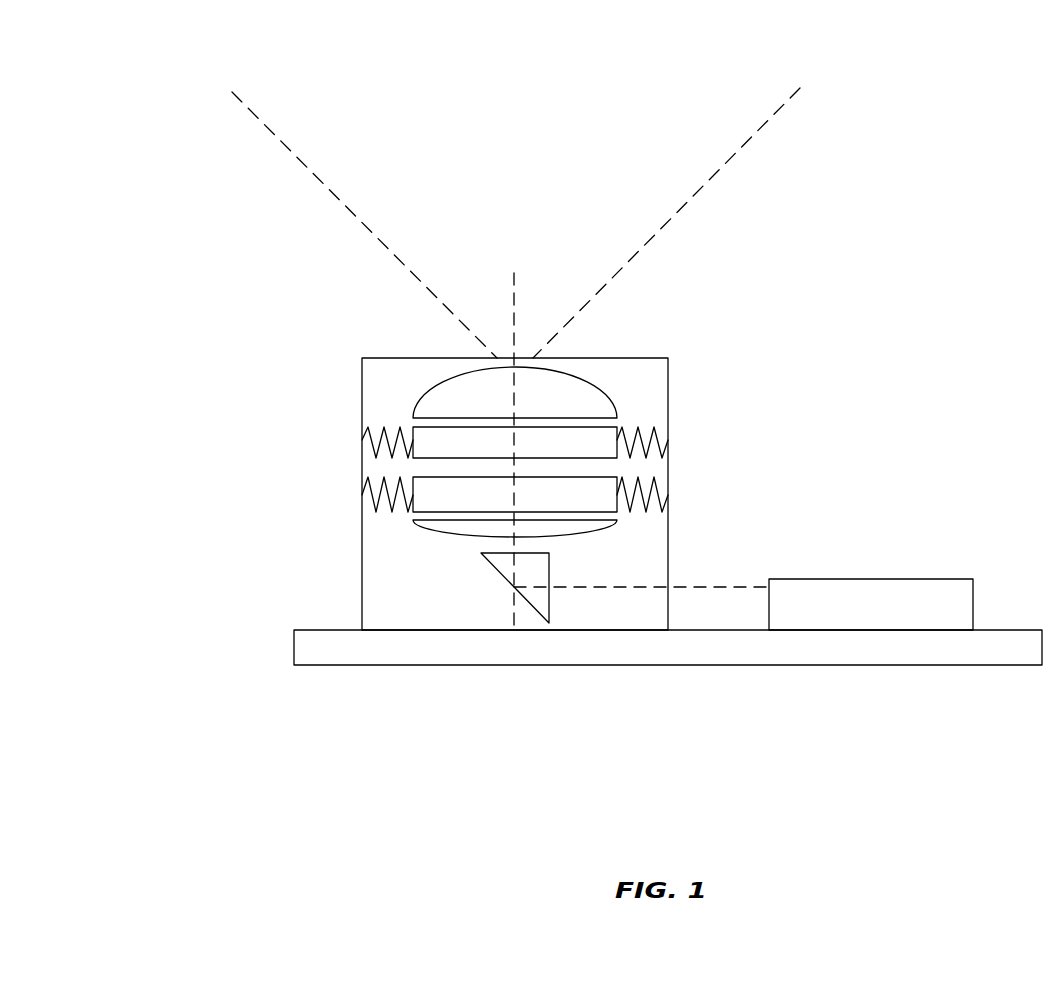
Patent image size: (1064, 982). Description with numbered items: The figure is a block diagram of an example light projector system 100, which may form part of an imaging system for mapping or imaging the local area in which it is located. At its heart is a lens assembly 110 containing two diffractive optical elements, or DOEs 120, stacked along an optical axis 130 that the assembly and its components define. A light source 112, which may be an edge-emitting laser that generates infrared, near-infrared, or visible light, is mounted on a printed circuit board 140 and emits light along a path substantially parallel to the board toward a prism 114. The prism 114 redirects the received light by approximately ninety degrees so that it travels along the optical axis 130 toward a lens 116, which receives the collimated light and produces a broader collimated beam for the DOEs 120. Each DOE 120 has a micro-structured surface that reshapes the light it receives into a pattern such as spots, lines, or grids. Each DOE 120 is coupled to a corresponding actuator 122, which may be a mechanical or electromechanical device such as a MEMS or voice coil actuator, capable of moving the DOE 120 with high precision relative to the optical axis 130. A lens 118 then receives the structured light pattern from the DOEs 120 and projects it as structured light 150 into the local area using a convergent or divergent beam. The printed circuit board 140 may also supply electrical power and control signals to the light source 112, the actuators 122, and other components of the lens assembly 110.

The light projector system 100 is at (165, 93).
The lens assembly 110 is at (362, 372).
The light source 112 is at (838, 579).
The prism 114 is at (500, 572).
The lens 116 is at (443, 528).
The lens 118 is at (422, 393).
The diffractive optical element 120 is at (430, 474).
The actuator 122 is at (668, 485).
The optical axis 130 is at (517, 305).
The printed circuit board 140 is at (565, 665).
The structured light 150 is at (377, 238).